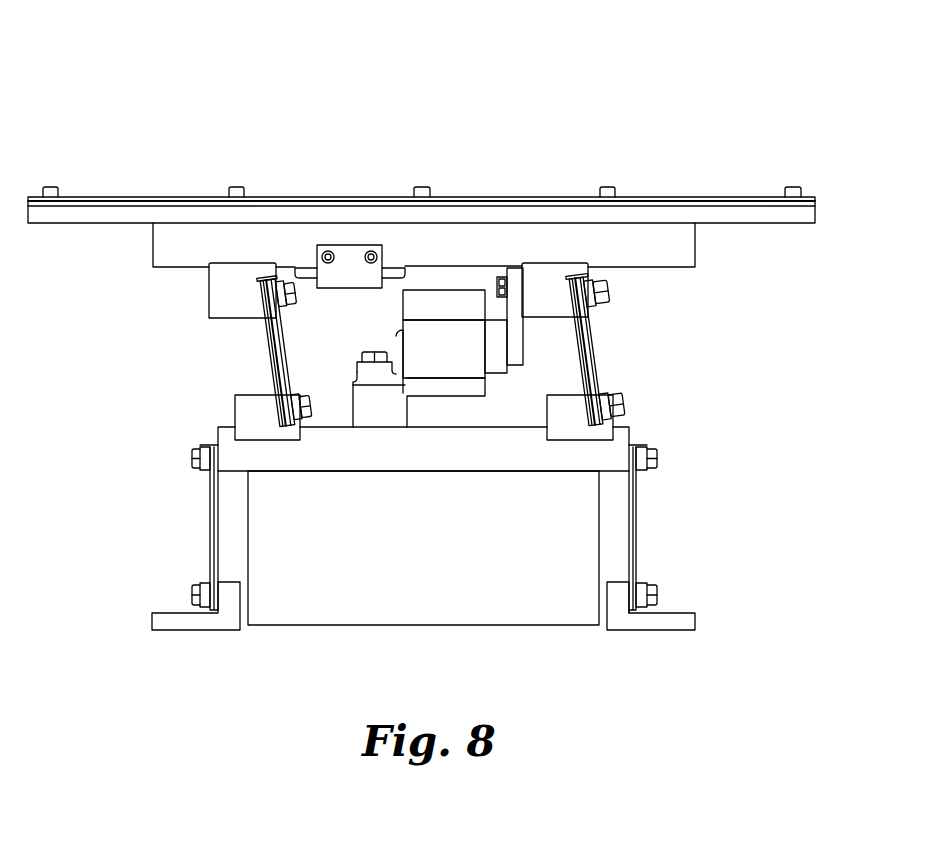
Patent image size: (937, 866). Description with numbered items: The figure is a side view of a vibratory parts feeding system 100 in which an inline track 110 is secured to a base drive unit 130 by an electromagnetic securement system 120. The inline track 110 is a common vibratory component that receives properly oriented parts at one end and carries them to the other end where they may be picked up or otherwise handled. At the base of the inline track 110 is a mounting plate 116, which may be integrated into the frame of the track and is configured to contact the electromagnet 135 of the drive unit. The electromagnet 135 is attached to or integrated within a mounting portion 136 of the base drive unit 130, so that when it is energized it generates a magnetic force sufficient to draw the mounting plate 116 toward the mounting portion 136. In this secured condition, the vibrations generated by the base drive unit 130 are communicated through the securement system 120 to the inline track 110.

The vibratory parts feeding system 100 is at (421, 367).
The inline track 110 is at (421, 159).
The mounting plate 116 is at (386, 245).
The electromagnetic securement system 120 is at (223, 357).
The base drive unit 130 is at (423, 591).
The electromagnet 135 is at (350, 308).
The mounting portion 136 is at (584, 355).